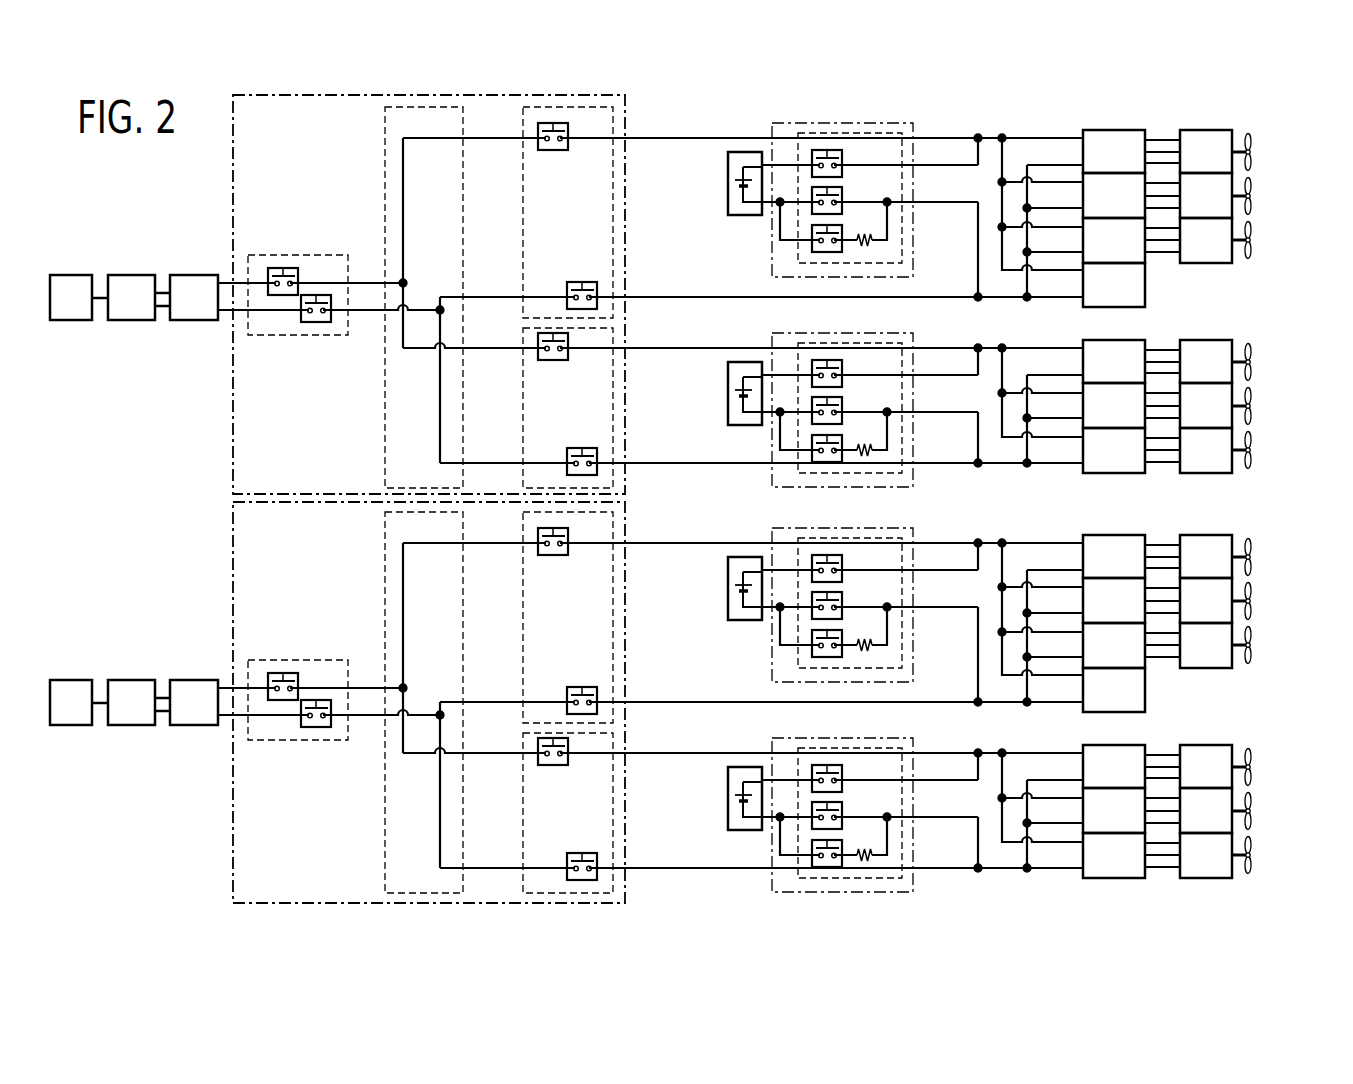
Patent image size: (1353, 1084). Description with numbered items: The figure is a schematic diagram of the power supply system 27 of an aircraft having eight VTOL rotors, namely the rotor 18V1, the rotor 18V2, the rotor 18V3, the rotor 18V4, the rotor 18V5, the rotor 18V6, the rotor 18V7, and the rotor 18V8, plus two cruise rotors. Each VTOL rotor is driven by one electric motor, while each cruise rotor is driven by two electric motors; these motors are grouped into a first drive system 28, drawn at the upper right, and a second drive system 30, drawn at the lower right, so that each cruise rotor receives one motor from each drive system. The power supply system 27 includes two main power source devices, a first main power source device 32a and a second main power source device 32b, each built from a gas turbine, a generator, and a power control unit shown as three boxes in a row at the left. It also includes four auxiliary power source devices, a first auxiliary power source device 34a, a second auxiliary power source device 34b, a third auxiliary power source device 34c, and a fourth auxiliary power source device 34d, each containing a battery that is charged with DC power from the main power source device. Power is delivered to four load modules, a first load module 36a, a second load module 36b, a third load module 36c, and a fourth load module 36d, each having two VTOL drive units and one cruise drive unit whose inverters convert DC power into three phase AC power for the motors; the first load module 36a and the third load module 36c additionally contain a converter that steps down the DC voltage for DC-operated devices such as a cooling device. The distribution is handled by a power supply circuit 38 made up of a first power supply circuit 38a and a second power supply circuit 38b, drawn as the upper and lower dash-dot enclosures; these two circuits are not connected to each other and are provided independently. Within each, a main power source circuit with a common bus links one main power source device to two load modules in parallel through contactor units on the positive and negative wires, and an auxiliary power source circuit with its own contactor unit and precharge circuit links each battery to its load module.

The power supply system 27 is at (103, 190).
The first drive system 28 is at (1273, 472).
The second drive system 30 is at (1265, 812).
The first main power source device 32a is at (130, 257).
The second main power source device 32b is at (134, 694).
The first auxiliary power source device 34a is at (722, 172).
The second auxiliary power source device 34b is at (705, 393).
The third auxiliary power source device 34c is at (705, 588).
The fourth auxiliary power source device 34d is at (705, 798).
The first load module 36a is at (1065, 305).
The second load module 36b is at (1068, 477).
The third load module 36c is at (1025, 638).
The fourth load module 36d is at (1028, 828).
The power supply circuit 38 is at (172, 833).
The first power supply circuit 38a is at (215, 170).
The second power supply circuit 38b is at (566, 702).
The rotor 18V1 is at (1250, 152).
The rotor 18V2 is at (1255, 556).
The rotor 18V3 is at (1255, 766).
The rotor 18V4 is at (1250, 362).
The rotor 18V5 is at (1250, 407).
The rotor 18V6 is at (1255, 810).
The rotor 18V7 is at (1255, 600).
The rotor 18V8 is at (1250, 197).